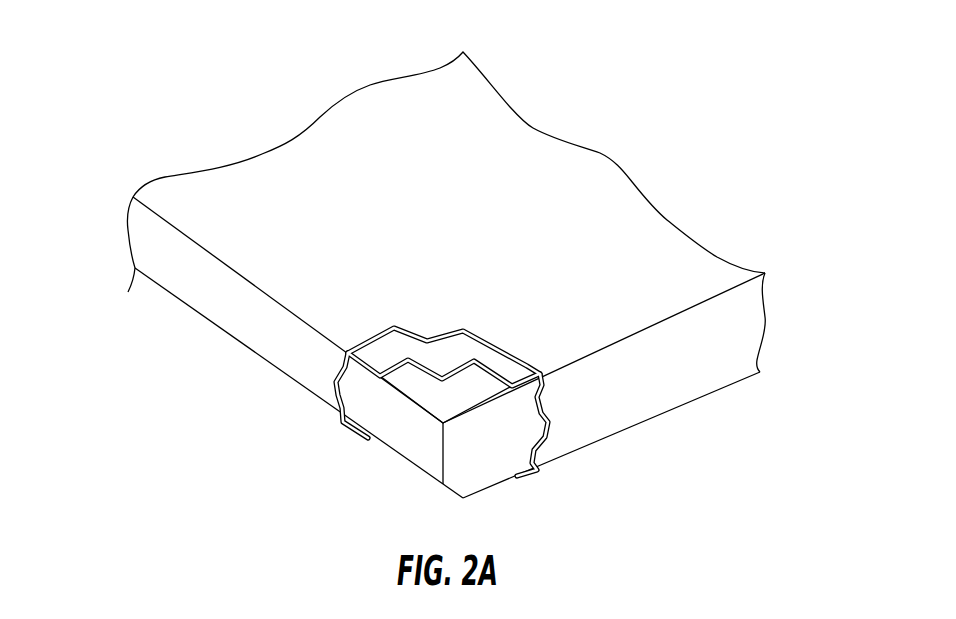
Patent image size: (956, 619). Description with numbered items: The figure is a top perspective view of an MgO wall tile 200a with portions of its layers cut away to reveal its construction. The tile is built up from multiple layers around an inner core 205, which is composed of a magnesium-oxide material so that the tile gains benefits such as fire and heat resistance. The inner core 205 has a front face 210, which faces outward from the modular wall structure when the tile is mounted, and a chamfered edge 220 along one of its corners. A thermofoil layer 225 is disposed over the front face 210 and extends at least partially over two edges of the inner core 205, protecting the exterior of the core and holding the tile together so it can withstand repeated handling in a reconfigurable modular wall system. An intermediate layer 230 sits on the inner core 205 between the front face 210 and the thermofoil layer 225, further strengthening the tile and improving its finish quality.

The MgO wall tile 200a is at (125, 75).
The inner core 205 is at (485, 462).
The front face 210 is at (440, 409).
The chamfered edge 220 is at (437, 504).
The thermofoil layer 225 is at (717, 353).
The intermediate layer 230 is at (517, 373).